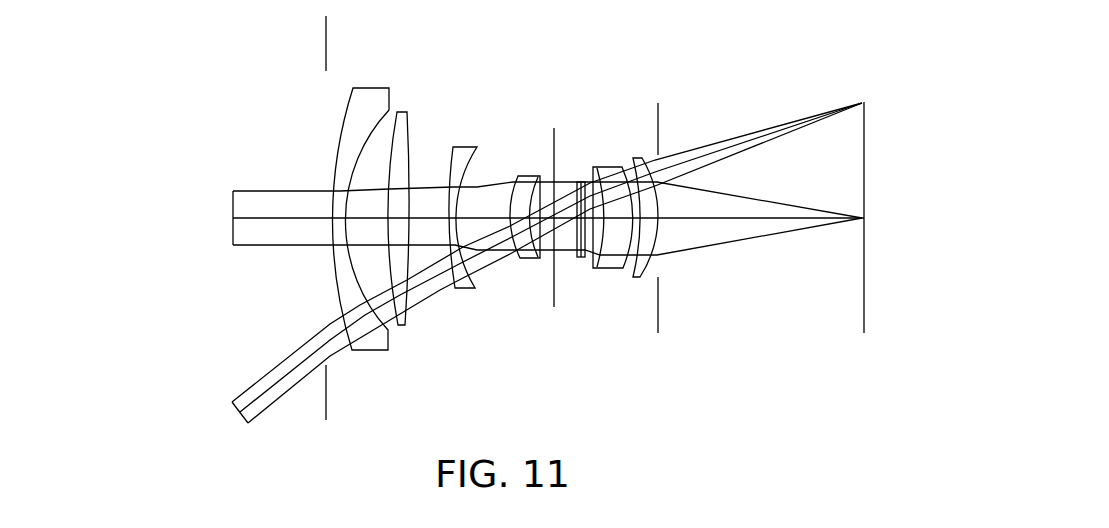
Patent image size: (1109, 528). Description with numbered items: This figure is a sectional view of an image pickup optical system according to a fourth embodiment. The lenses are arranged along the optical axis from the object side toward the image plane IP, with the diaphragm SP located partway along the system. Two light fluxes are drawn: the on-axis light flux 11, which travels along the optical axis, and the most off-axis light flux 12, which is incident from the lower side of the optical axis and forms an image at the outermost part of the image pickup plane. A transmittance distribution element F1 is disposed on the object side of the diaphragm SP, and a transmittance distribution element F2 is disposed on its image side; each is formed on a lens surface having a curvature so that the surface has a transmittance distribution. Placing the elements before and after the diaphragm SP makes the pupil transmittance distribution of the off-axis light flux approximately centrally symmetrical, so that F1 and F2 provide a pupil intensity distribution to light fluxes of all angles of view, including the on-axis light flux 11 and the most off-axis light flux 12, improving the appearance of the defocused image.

The on-axis light flux 11 is at (235, 183).
The most off-axis light flux 12 is at (235, 392).
The diaphragm SP is at (553, 202).
The image plane IP is at (872, 200).
The transmittance distribution element F1 is at (512, 255).
The transmittance distribution element F2 is at (604, 251).